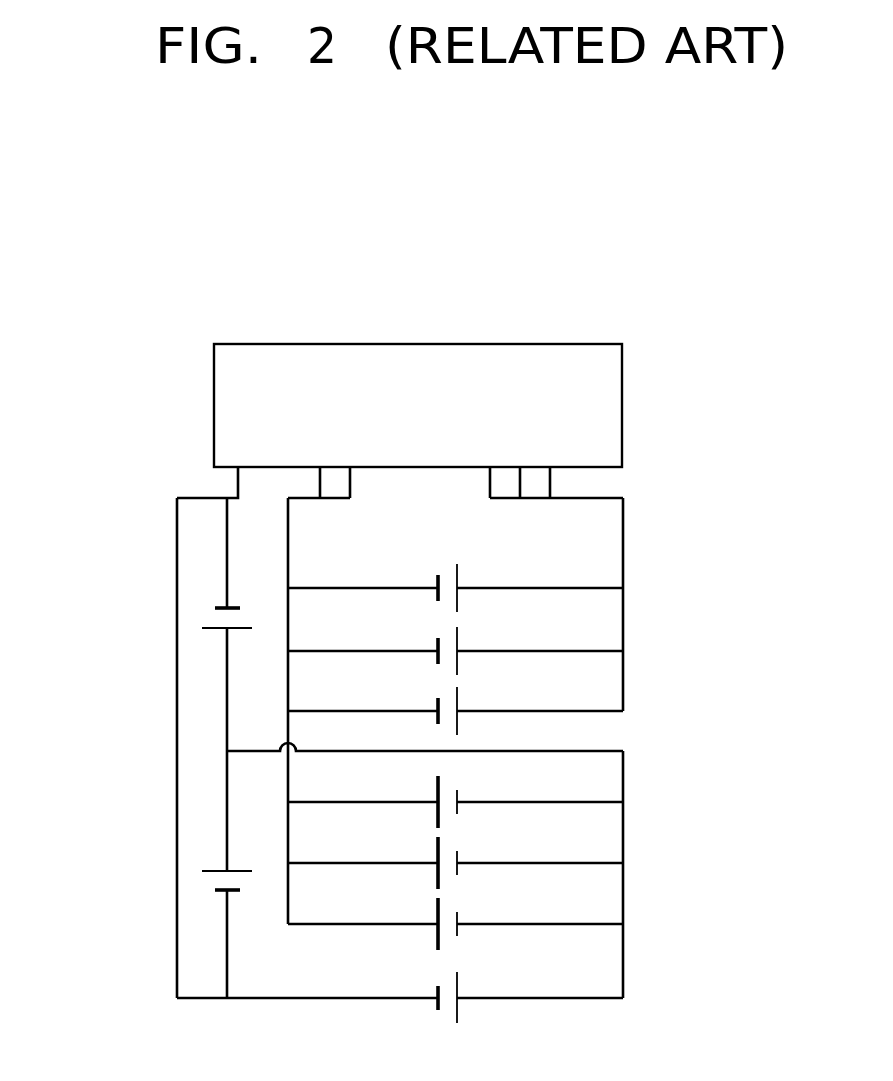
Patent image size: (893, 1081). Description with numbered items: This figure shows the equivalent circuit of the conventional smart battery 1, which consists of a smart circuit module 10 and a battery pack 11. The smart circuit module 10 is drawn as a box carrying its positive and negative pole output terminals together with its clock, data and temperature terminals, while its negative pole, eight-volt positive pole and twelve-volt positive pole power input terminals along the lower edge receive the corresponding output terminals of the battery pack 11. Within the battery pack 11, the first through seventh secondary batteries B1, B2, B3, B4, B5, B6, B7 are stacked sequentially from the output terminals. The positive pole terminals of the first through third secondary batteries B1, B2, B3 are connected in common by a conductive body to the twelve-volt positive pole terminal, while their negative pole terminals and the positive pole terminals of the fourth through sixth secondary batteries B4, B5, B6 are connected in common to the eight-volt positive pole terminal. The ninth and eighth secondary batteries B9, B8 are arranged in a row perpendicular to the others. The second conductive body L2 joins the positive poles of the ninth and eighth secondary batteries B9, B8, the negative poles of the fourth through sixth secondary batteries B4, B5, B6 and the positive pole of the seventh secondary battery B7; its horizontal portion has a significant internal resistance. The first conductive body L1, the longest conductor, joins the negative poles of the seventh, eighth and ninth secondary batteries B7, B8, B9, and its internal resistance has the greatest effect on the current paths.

The smart battery 1 is at (650, 306).
The smart circuit module 10 is at (213, 406).
The battery pack 11 is at (110, 727).
The first conductive body L1 is at (177, 752).
The second conductive body L2 is at (611, 750).
The first secondary battery B1 is at (455, 581).
The second secondary battery B2 is at (455, 644).
The third secondary battery B3 is at (455, 704).
The fourth secondary battery B4 is at (455, 796).
The fifth secondary battery B5 is at (455, 857).
The sixth secondary battery B6 is at (455, 918).
The seventh secondary battery B7 is at (466, 991).
The eighth secondary battery B8 is at (219, 865).
The ninth secondary battery B9 is at (219, 603).